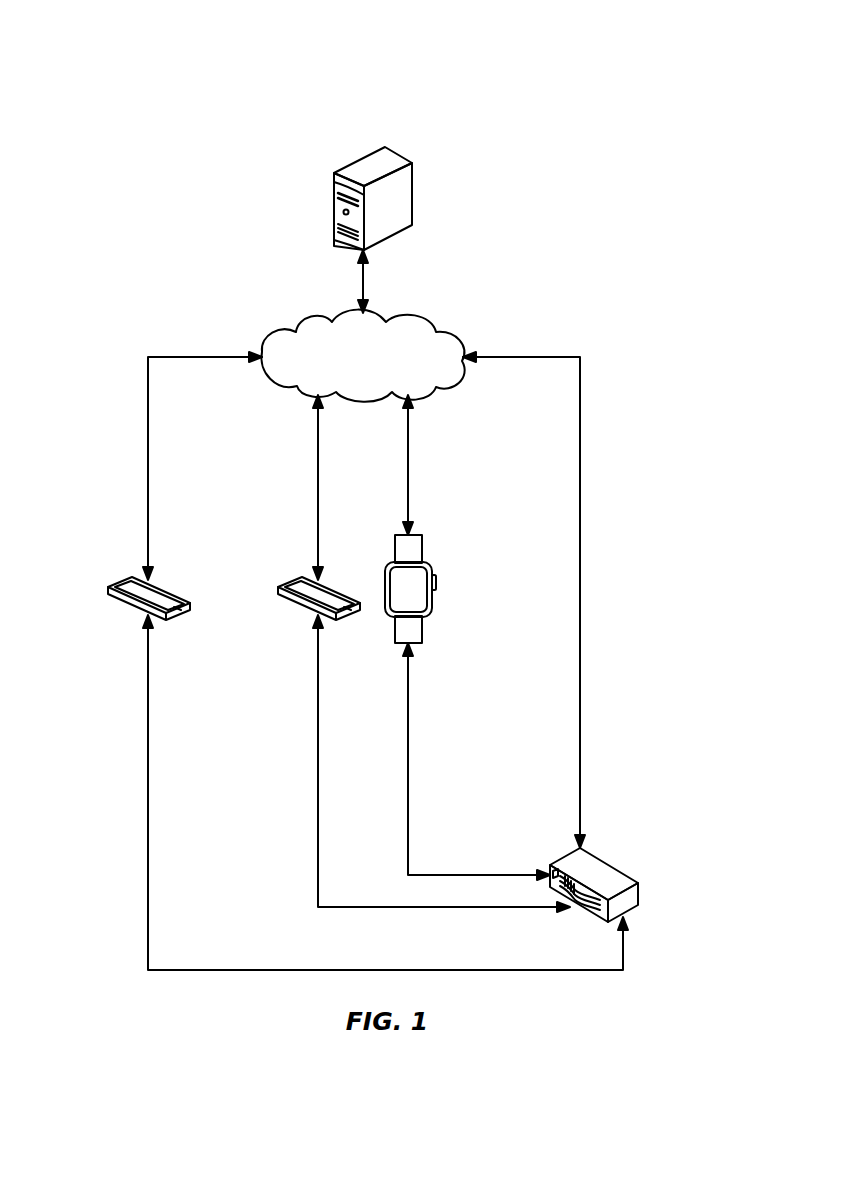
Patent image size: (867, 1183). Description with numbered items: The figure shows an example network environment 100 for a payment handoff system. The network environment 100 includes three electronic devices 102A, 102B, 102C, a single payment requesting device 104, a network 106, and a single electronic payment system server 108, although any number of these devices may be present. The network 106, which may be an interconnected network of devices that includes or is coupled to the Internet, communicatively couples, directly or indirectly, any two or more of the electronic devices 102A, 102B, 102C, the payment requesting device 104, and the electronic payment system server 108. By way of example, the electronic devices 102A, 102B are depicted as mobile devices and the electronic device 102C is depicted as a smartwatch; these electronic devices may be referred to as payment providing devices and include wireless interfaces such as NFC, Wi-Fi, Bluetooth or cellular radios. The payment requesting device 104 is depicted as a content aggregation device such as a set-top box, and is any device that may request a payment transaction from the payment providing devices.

The network environment 100 is at (58, 96).
The electronic device 102A is at (125, 580).
The electronic device 102B is at (295, 580).
The electronic device 102C is at (434, 598).
The payment requesting device 104 is at (608, 864).
The network 106 is at (284, 331).
The electronic payment system server 108 is at (359, 160).